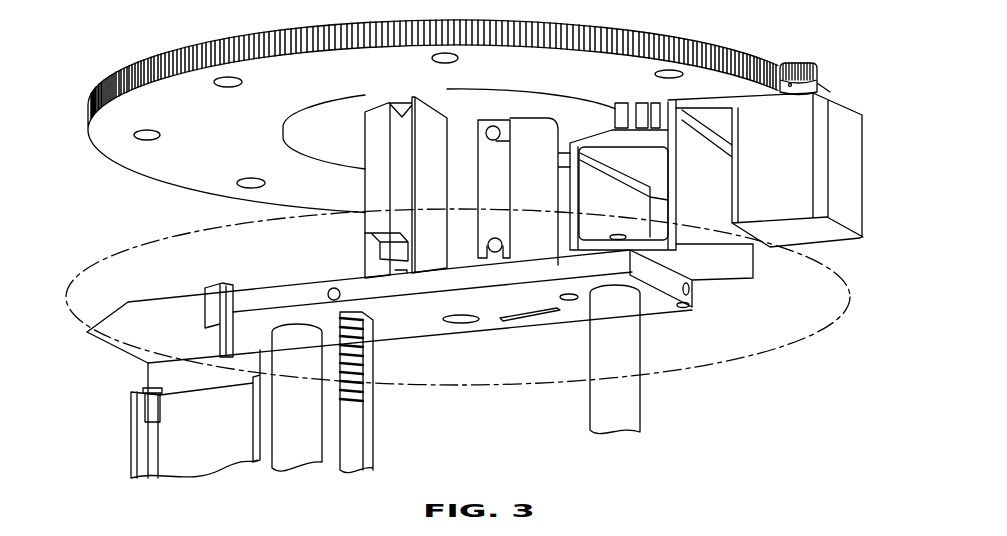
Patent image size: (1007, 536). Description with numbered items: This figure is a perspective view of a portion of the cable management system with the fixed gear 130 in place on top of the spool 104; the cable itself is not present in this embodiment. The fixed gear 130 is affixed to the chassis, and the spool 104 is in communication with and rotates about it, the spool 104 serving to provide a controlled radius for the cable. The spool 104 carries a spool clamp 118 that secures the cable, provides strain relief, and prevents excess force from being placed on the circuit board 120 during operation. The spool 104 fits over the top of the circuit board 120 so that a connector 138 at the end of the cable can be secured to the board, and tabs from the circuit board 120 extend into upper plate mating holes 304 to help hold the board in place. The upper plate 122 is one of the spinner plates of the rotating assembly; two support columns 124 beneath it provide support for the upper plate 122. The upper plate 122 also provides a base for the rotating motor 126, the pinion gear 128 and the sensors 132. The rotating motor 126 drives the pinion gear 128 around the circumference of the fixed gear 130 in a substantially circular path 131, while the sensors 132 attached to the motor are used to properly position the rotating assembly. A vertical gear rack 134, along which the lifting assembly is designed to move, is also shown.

The spool 104 is at (537, 123).
The spool clamp 118 is at (508, 167).
The circuit board 120 is at (397, 103).
The upper plate 122 is at (692, 290).
The support columns 124 is at (640, 348).
The rotating motor 126 is at (863, 172).
The pinion gear 128 is at (813, 62).
The fixed gear 130 is at (88, 112).
The circular path 131 is at (777, 353).
The sensors 132 is at (612, 122).
The vertical gear rack 134 is at (373, 425).
The connector 138 is at (365, 192).
The upper plate mating holes 304 is at (467, 323).